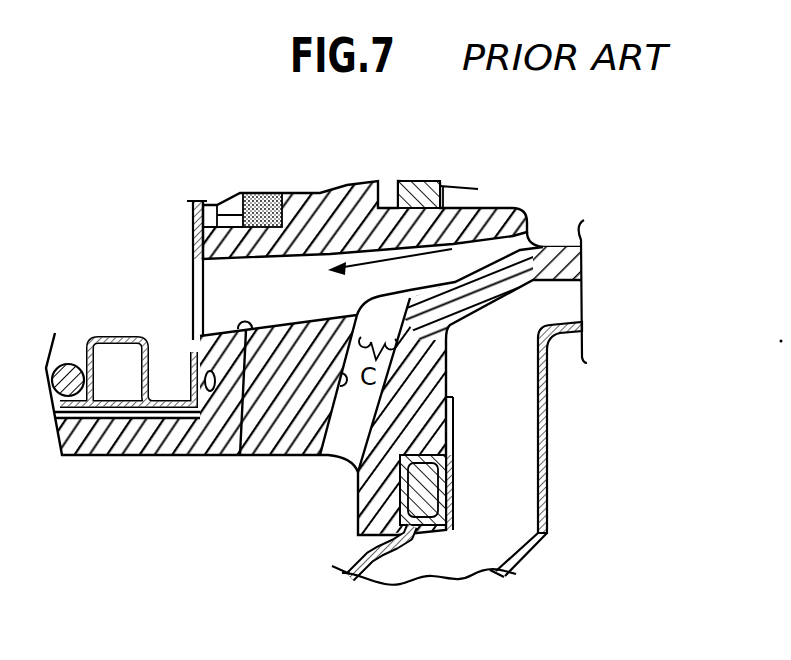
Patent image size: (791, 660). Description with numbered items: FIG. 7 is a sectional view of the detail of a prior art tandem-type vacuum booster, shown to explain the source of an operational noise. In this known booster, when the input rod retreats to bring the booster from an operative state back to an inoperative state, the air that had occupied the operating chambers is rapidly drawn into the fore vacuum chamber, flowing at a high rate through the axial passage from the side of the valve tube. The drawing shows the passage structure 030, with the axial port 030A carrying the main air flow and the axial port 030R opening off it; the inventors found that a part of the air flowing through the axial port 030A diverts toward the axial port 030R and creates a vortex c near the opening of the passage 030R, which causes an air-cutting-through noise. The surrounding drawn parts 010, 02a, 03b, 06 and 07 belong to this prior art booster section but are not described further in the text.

The cylinder body 010 is at (315, 218).
The seal 02a is at (140, 303).
The piston 03b is at (500, 386).
The piston assembly 030 is at (202, 426).
The axial port 030A is at (232, 457).
The axial port 030R is at (298, 457).
The dust boot 06 is at (355, 568).
The seal ring 07 is at (363, 577).